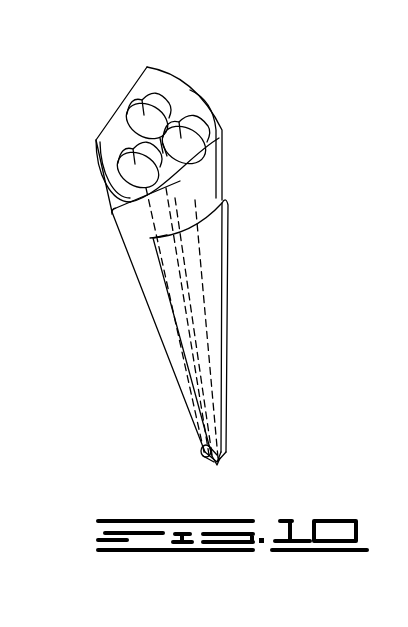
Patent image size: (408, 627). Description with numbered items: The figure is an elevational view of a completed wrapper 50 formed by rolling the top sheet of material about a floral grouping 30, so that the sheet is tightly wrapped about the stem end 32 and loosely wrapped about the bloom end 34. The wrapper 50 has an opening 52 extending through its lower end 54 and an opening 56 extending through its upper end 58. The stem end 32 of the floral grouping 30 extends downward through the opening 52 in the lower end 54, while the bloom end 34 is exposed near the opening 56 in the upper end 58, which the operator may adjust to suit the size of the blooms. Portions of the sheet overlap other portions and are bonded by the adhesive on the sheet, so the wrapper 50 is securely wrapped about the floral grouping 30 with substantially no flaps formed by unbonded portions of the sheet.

The floral grouping 30 is at (141, 222).
The stem end 32 is at (221, 470).
The bloom end 34 is at (202, 150).
The wrapper 50 is at (276, 212).
The opening 52 is at (210, 465).
The lower end 54 is at (226, 462).
The opening 56 is at (191, 112).
The upper end 58 is at (96, 148).